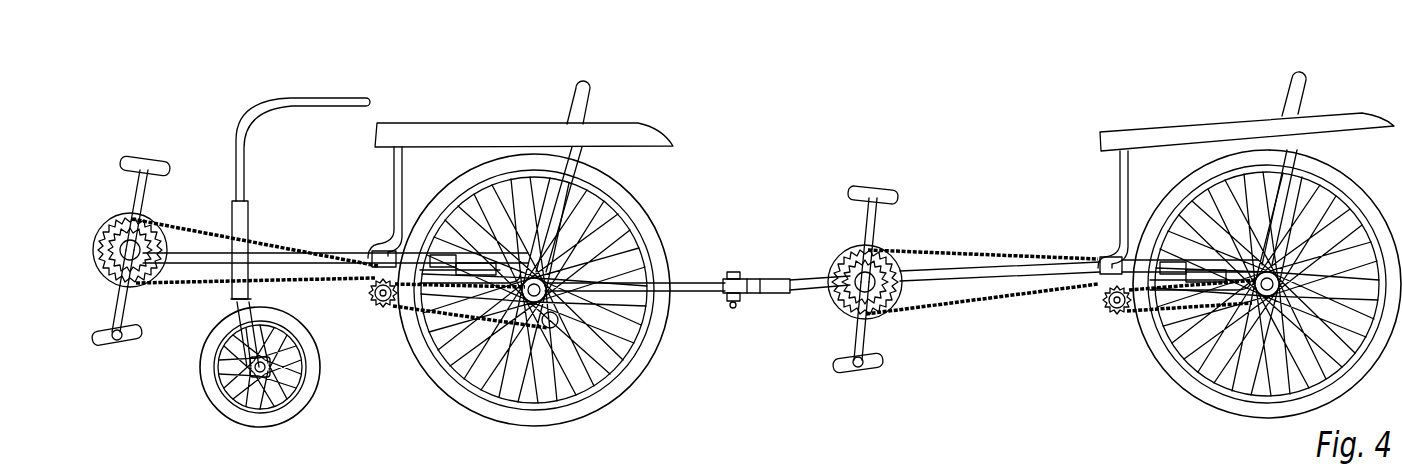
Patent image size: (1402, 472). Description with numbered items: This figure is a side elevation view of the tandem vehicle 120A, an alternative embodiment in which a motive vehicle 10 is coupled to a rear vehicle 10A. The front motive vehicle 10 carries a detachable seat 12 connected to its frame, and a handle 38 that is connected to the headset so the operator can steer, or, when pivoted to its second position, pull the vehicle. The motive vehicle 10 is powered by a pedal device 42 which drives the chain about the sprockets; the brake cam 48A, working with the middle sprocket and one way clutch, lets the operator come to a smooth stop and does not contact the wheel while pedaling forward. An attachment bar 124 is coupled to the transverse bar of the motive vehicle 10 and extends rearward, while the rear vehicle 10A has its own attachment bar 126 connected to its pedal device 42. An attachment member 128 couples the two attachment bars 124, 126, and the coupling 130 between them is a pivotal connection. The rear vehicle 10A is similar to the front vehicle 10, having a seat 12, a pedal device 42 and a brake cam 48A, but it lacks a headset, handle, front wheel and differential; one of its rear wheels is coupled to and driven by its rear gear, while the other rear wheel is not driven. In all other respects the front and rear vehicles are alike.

The tandem vehicle 120A is at (187, 132).
The motive vehicle 10 is at (232, 154).
The rear vehicle 10A is at (1101, 137).
The seat 12 is at (595, 86).
The handle 38 is at (262, 117).
The pedal device 42 is at (124, 316).
The brake cam 48A is at (381, 312).
The attachment bar 124 is at (687, 287).
The attachment bar 126 is at (805, 278).
The attachment member 128 is at (757, 283).
The coupling 130 is at (737, 275).